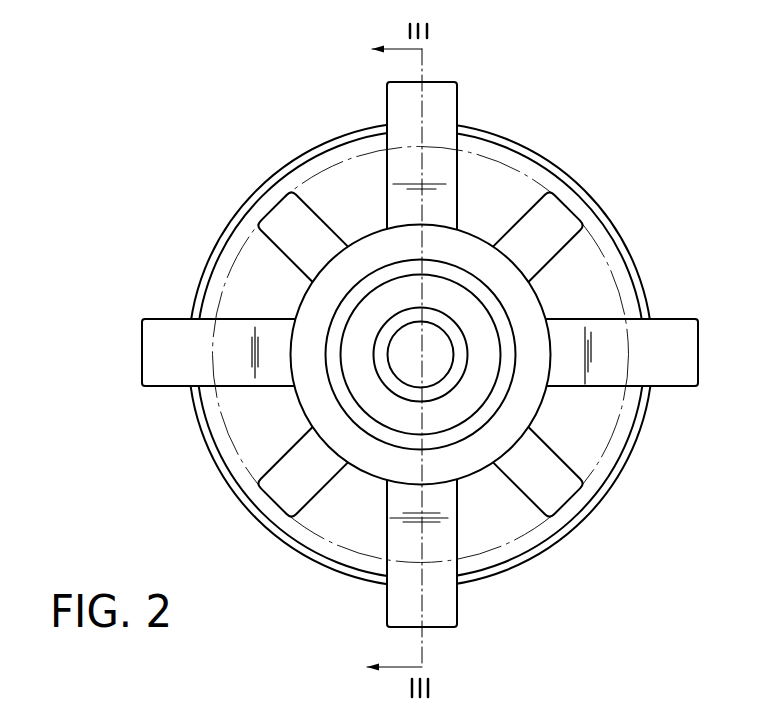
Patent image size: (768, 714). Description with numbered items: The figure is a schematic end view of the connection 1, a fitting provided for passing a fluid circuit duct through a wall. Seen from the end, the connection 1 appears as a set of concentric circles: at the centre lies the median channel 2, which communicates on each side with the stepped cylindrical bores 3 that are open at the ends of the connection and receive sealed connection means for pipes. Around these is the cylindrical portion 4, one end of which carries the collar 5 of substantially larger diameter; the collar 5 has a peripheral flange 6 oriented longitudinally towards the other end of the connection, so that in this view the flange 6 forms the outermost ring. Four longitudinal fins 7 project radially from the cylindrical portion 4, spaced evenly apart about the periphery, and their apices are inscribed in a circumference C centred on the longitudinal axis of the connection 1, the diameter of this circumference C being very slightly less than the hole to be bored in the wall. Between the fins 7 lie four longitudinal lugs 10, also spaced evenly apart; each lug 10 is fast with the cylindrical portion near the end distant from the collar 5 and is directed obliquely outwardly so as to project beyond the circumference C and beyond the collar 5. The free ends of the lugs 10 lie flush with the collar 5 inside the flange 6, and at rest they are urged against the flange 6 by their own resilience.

The connection 1 is at (449, 360).
The median channel 2 is at (451, 363).
The stepped cylindrical bores 3 is at (476, 373).
The cylindrical portion 4 is at (533, 394).
The collar 5 is at (590, 290).
The flange 6 is at (571, 182).
The longitudinal fins 7 is at (323, 236).
The longitudinal lugs 10 is at (678, 368).
The circumference C is at (509, 540).